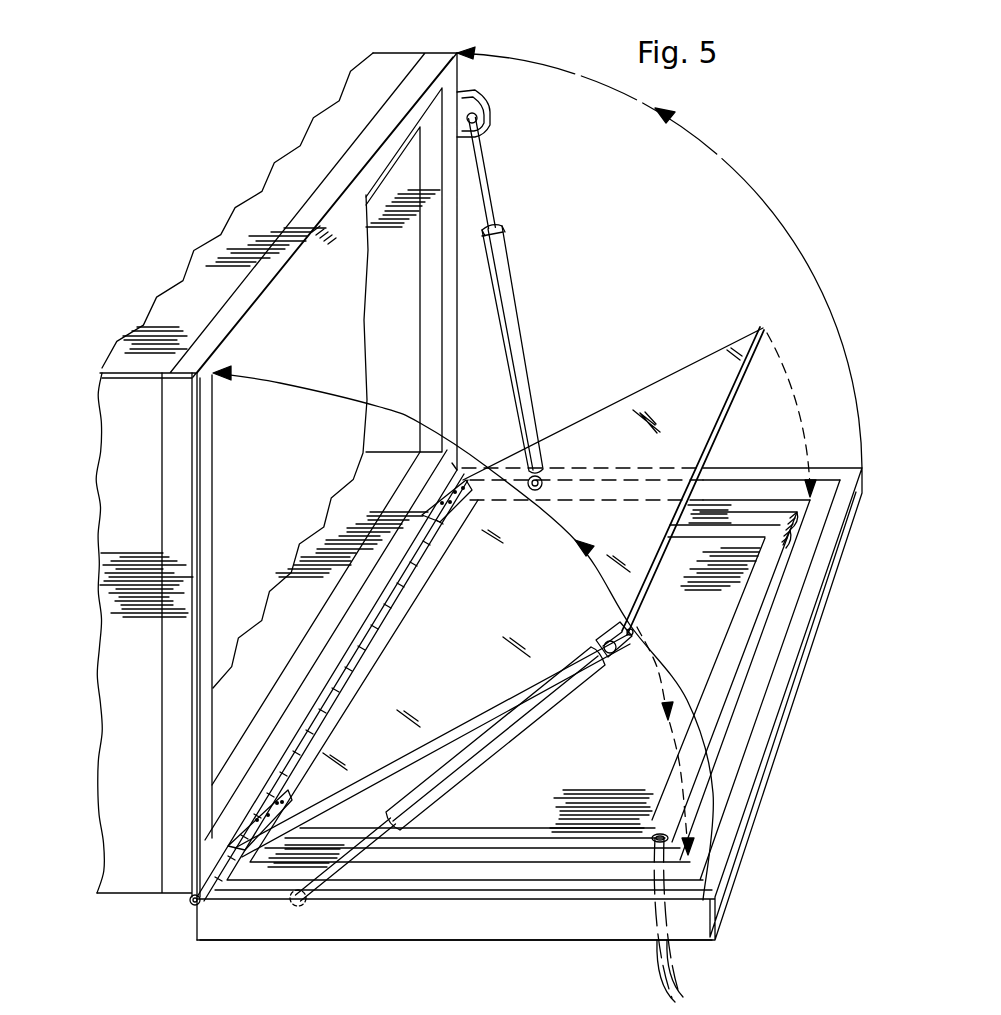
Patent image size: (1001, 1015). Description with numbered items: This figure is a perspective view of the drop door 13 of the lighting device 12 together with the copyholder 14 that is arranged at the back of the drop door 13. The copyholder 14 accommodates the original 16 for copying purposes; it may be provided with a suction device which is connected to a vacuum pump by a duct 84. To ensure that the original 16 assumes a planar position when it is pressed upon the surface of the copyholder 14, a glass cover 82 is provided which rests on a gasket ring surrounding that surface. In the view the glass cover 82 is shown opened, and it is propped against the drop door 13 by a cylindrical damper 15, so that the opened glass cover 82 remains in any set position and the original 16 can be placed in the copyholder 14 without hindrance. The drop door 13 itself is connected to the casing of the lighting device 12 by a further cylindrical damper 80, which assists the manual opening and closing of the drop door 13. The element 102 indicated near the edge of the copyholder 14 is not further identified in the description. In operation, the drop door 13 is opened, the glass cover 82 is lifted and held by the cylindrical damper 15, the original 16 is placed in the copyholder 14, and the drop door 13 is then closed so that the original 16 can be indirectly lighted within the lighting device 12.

The lighting device 12 is at (411, 50).
The drop door 13 is at (636, 938).
The copyholder 14 is at (716, 773).
The cylindrical damper 15 is at (503, 720).
The original 16 is at (695, 637).
The further cylindrical damper 80 is at (505, 270).
The glass cover 82 is at (683, 378).
The duct 84 is at (671, 969).
The glazing strip 102 is at (765, 513).